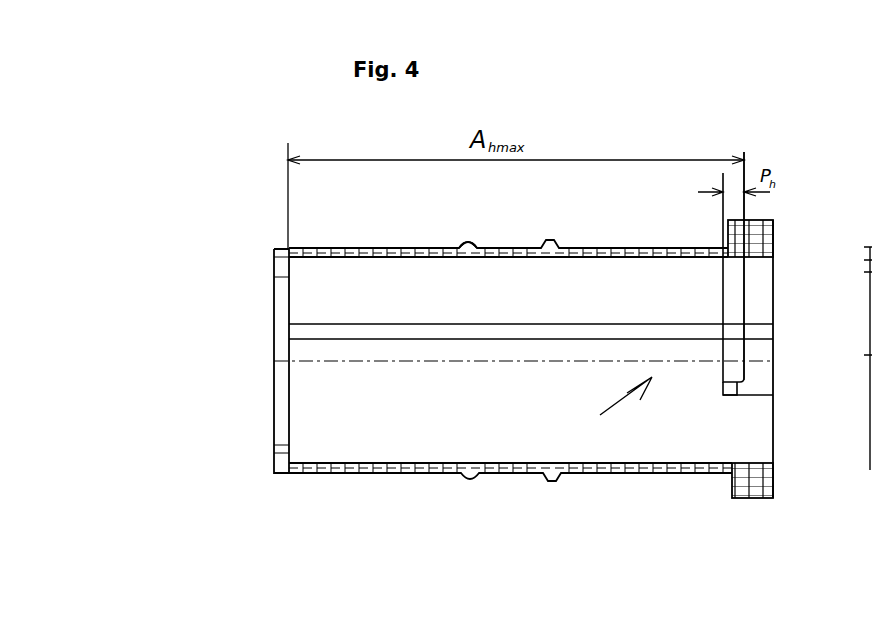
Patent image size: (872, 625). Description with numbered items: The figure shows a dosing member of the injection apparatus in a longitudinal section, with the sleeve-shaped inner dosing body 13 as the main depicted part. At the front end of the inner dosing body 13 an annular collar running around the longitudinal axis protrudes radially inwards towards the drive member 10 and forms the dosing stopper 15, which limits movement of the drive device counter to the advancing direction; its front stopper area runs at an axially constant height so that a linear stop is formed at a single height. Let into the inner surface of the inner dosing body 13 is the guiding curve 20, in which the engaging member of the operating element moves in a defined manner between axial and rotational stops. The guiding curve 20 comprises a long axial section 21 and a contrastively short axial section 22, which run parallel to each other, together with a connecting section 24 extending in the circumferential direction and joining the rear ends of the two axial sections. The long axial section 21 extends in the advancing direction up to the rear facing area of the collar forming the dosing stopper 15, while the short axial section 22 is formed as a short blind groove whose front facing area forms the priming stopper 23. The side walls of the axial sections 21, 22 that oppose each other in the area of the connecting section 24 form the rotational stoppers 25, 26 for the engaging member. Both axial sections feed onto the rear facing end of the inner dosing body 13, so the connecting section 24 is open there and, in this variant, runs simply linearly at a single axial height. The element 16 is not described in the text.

The drive member 10 is at (858, 261).
The inner dosing body 13 is at (457, 424).
The dosing stopper 15 is at (277, 458).
The projection 16 is at (473, 243).
The guiding curve 20 is at (600, 415).
The long axial section 21 is at (362, 330).
The short axial section 22 is at (736, 388).
The priming stopper 23 is at (714, 395).
The connecting section 24 is at (767, 367).
The rotational stopper 25 is at (755, 408).
The rotational stopper 26 is at (766, 313).